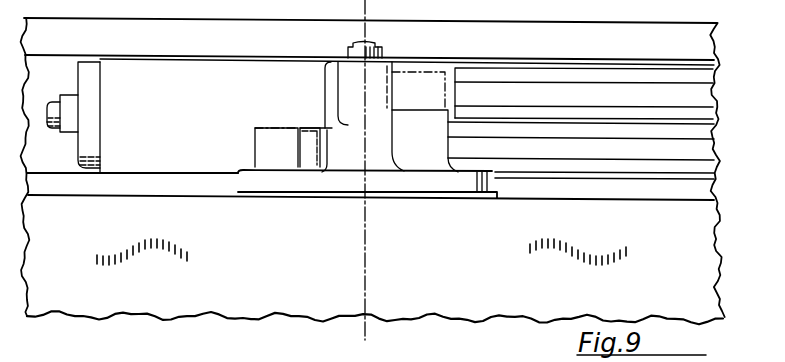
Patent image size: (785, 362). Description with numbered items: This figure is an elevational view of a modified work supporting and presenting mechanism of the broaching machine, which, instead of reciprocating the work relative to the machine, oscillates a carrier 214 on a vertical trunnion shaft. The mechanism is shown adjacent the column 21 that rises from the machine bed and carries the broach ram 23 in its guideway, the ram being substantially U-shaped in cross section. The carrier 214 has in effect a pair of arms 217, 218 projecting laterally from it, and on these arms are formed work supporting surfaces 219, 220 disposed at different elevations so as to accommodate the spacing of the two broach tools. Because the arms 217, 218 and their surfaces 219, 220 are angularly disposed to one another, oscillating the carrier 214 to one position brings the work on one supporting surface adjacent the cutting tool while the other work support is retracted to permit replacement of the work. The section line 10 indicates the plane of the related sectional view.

The section line 10 is at (365, 340).
The column 21 is at (703, 248).
The broach ram 23 is at (533, 78).
The carrier 214 is at (346, 93).
The arm 217 is at (325, 172).
The arm 218 is at (433, 165).
The work supporting surface 219 is at (277, 172).
The work supporting surface 220 is at (420, 111).